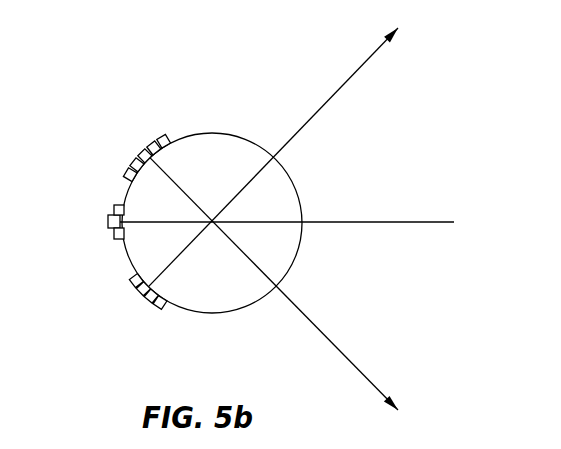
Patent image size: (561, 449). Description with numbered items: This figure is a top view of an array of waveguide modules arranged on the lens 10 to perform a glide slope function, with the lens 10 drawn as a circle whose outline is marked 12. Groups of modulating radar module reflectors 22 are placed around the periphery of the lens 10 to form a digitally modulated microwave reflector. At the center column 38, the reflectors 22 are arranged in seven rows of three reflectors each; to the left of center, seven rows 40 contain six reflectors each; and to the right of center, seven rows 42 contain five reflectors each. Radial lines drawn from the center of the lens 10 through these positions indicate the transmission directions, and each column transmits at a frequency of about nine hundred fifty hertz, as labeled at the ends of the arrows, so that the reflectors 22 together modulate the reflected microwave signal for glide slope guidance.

The lens 10 is at (215, 101).
The circular periphery of rotating body 12 is at (247, 135).
The modulating radar module reflectors 22 is at (156, 137).
The center column 38 is at (107, 222).
The rows to the left of center 40 is at (133, 162).
The rows to the right of center 42 is at (138, 302).